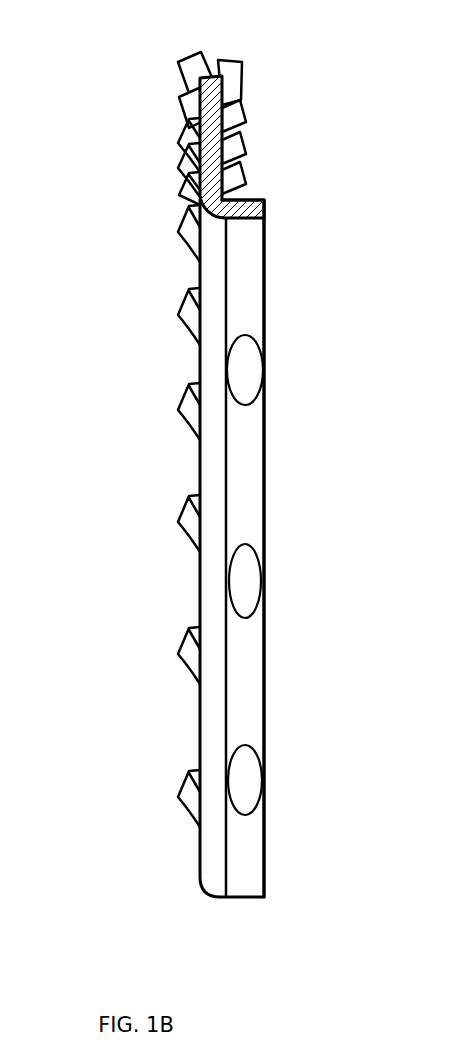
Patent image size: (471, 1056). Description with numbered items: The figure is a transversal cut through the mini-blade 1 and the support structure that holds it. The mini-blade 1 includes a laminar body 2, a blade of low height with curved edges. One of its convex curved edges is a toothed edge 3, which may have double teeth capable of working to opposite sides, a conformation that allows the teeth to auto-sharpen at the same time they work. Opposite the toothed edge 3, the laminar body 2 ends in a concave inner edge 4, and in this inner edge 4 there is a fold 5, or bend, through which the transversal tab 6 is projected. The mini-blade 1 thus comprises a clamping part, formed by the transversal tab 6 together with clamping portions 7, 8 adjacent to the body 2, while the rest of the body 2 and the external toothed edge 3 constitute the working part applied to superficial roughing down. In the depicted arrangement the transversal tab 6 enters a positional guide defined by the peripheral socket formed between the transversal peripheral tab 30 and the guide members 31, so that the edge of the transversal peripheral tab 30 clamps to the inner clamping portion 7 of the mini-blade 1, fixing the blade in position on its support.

The mini-blade 1 is at (133, 622).
The laminar body 2 is at (195, 128).
The toothed edge 3 is at (213, 52).
The inner edge 4 is at (233, 220).
The fold 5 is at (205, 237).
The transversal tab 6 is at (265, 212).
The inner clamping portion 7 is at (222, 160).
The clamping portion 8 is at (197, 157).
The transversal peripheral tab 30 is at (316, 183).
The guide members 31 is at (292, 575).